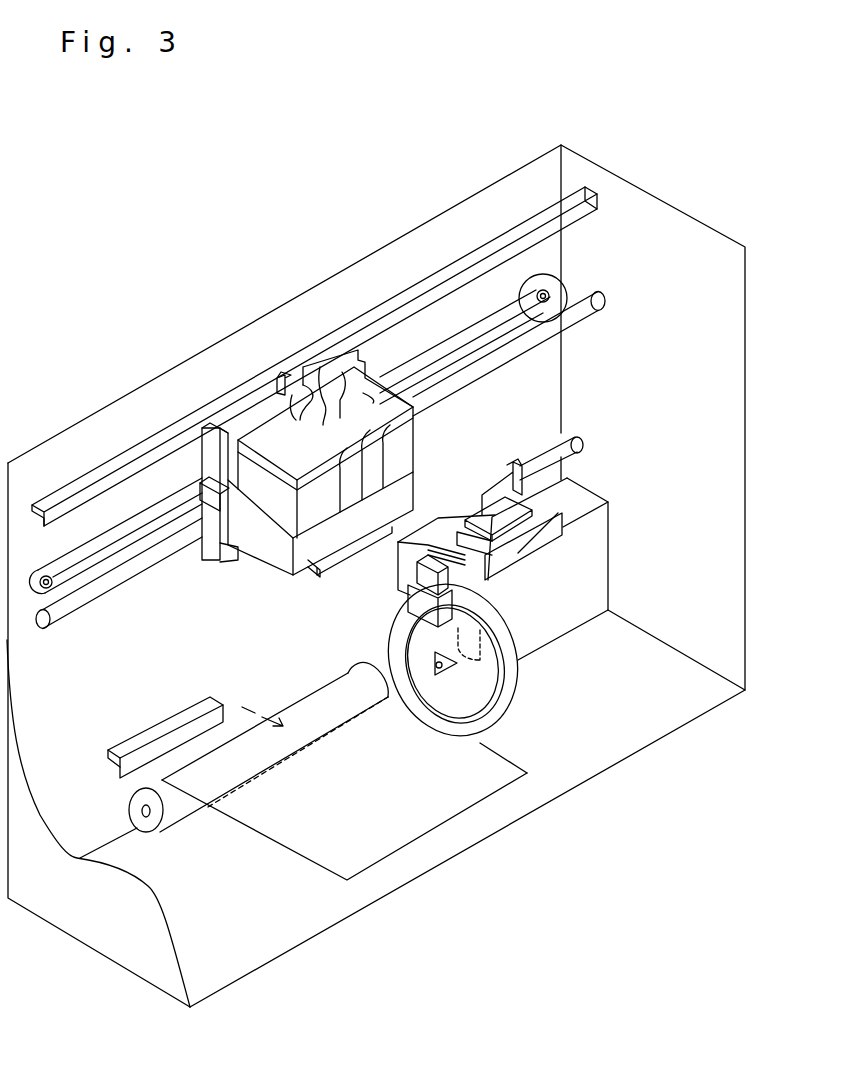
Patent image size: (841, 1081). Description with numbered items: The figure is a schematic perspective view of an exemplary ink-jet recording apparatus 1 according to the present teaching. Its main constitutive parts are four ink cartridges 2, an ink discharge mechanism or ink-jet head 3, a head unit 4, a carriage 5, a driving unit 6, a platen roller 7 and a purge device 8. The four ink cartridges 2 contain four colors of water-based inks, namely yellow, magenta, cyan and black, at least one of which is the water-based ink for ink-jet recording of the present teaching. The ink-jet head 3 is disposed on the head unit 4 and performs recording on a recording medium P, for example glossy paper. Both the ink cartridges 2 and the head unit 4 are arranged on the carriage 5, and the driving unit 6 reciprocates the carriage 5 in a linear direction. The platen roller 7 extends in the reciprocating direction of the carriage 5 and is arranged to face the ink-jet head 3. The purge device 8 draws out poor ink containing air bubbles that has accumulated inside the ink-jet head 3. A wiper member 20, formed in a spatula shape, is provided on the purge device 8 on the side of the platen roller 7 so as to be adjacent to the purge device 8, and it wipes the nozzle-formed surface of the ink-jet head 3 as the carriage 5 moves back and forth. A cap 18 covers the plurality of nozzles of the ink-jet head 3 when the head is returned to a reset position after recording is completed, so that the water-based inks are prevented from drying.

The ink-jet recording apparatus 1 is at (283, 177).
The ink cartridges 2 is at (327, 392).
The ink discharge mechanism (ink-jet head) 3 is at (358, 545).
The head unit 4 is at (345, 583).
The carriage 5 is at (217, 443).
The driving unit 6 is at (583, 172).
The platen roller 7 is at (178, 802).
The purge device 8 is at (665, 595).
The cap 18 is at (513, 512).
The wiper member 20 is at (428, 598).
The recording medium P is at (332, 853).